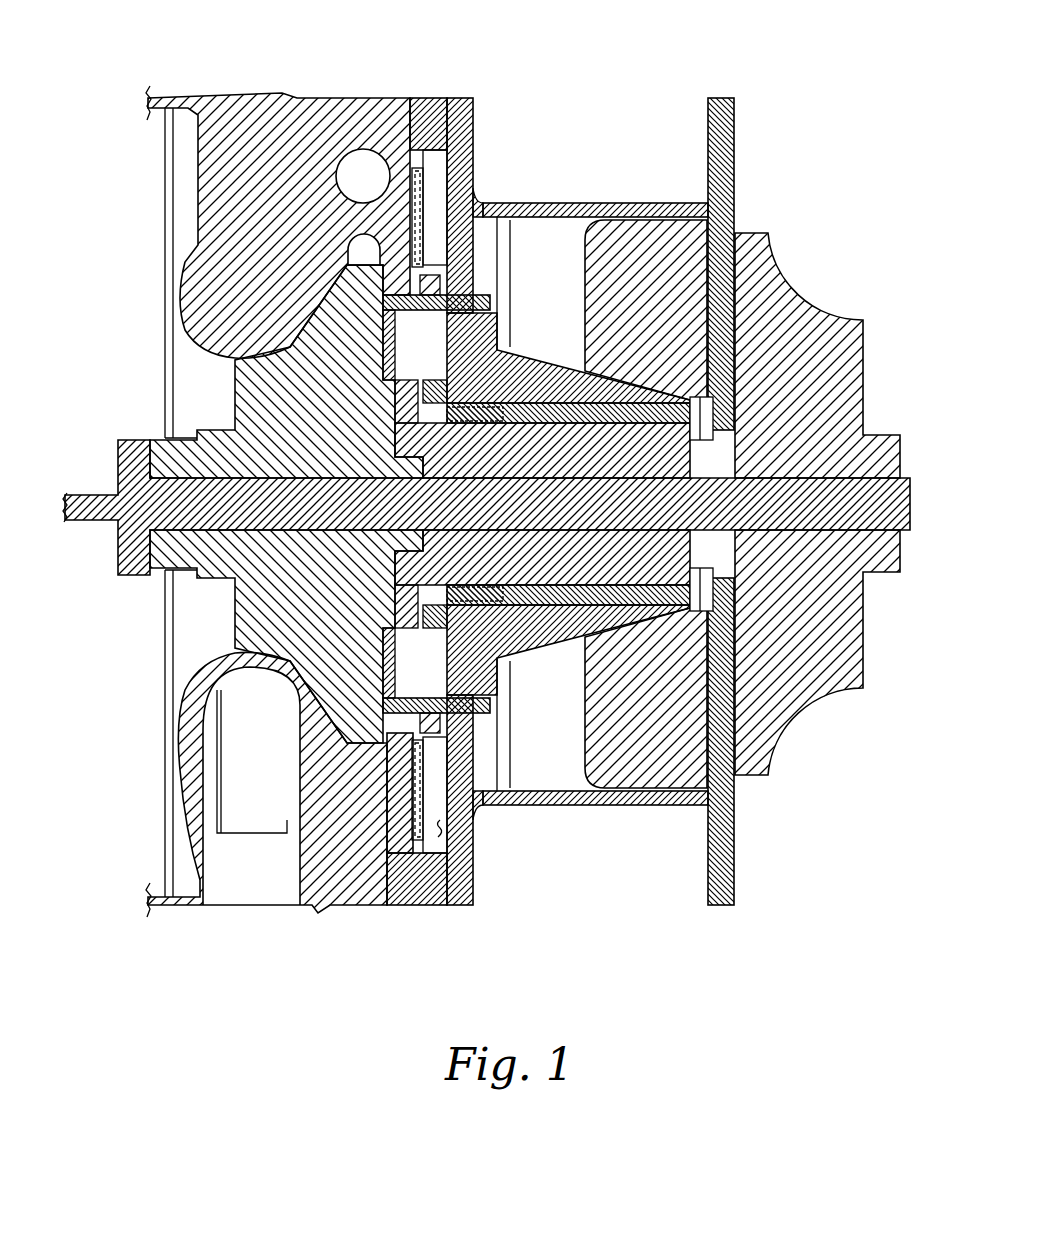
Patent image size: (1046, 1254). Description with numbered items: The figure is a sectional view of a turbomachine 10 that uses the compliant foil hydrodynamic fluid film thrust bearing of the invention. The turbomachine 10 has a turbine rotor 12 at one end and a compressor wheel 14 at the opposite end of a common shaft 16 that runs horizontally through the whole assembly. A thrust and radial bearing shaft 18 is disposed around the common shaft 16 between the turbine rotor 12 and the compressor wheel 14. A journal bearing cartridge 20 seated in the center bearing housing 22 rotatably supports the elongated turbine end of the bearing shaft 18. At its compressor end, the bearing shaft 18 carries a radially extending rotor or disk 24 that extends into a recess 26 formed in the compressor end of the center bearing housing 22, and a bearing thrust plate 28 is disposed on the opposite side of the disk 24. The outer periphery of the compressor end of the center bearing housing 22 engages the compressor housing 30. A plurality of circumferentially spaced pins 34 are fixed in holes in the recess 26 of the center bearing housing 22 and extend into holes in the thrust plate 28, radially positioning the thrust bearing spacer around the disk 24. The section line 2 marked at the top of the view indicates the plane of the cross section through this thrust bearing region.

The section line 2- 2 is at (462, 300).
The turbomachine 10 is at (838, 936).
The turbine rotor 12 is at (793, 297).
The compressor wheel 14 is at (235, 395).
The common shaft 16 is at (88, 523).
The thrust and radial bearing shaft 18 is at (712, 462).
The journal bearing cartridge 20 is at (575, 641).
The center bearing housing 22 is at (660, 805).
The disk 24 is at (505, 685).
The recess 26 is at (440, 830).
The bearing thrust plate 28 is at (420, 798).
The compressor housing 30 is at (224, 98).
The pins 34 is at (483, 203).